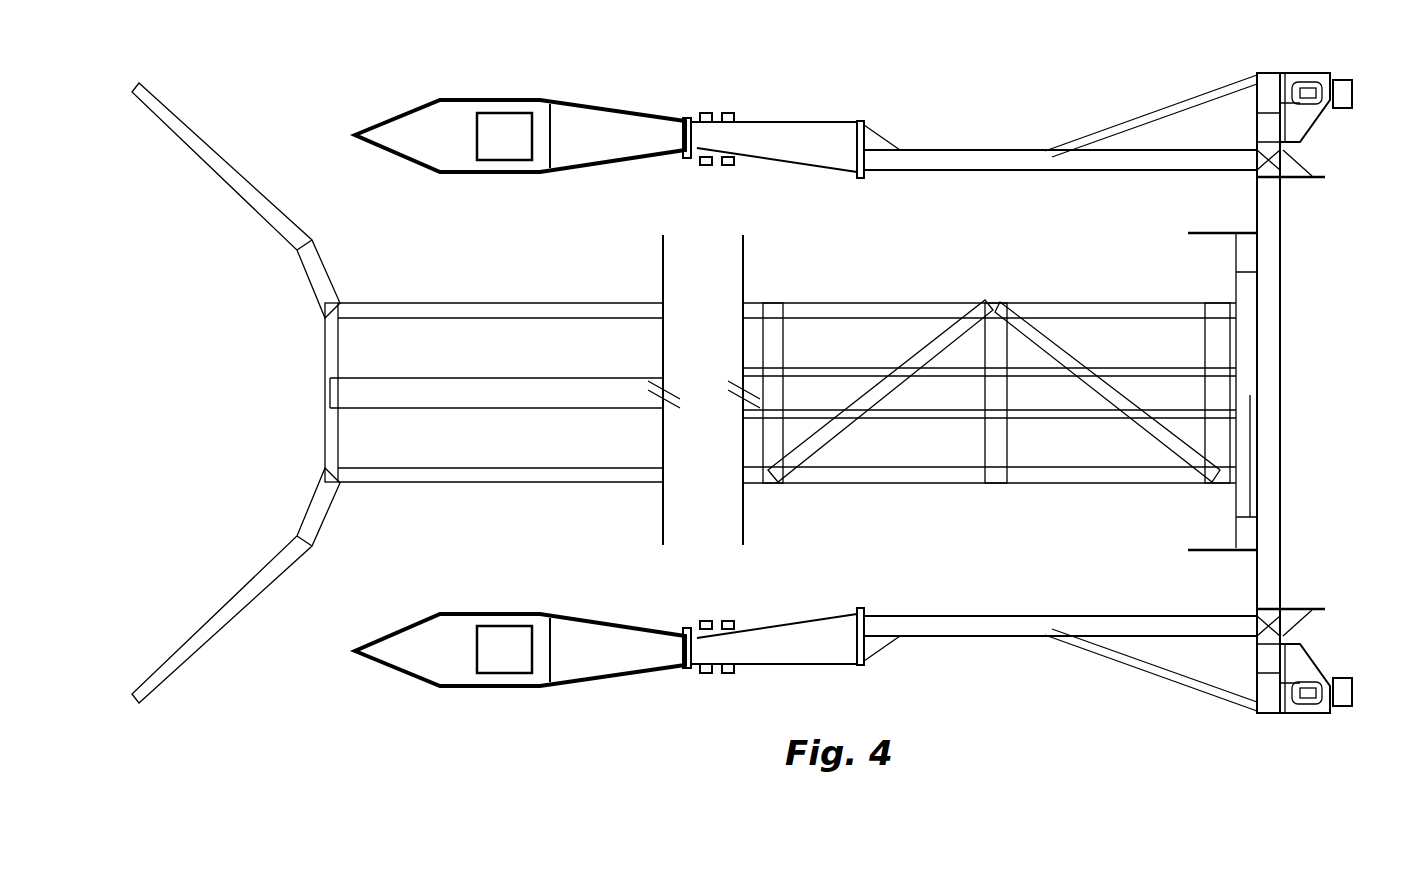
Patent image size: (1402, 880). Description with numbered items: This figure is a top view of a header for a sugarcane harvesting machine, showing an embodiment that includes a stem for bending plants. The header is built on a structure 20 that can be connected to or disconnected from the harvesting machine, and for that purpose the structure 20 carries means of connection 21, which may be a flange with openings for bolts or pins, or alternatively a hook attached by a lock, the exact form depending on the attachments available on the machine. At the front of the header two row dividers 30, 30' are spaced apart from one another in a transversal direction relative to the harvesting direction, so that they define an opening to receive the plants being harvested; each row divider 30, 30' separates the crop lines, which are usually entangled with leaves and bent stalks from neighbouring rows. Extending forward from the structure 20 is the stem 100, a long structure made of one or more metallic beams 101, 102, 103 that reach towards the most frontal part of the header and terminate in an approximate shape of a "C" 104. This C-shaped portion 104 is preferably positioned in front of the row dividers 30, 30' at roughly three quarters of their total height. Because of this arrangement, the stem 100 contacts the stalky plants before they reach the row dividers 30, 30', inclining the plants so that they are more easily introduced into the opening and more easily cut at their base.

The structure 20 is at (1020, 157).
The means of connection 21 is at (1353, 100).
The row divider 30 is at (544, 101).
The row divider 30' is at (544, 704).
The stem 100 is at (783, 395).
The metallic beam 101 is at (880, 312).
The metallic beam 102 is at (1033, 395).
The metallic beam 103 is at (921, 478).
The approximate shape of a "C" 104 is at (238, 596).